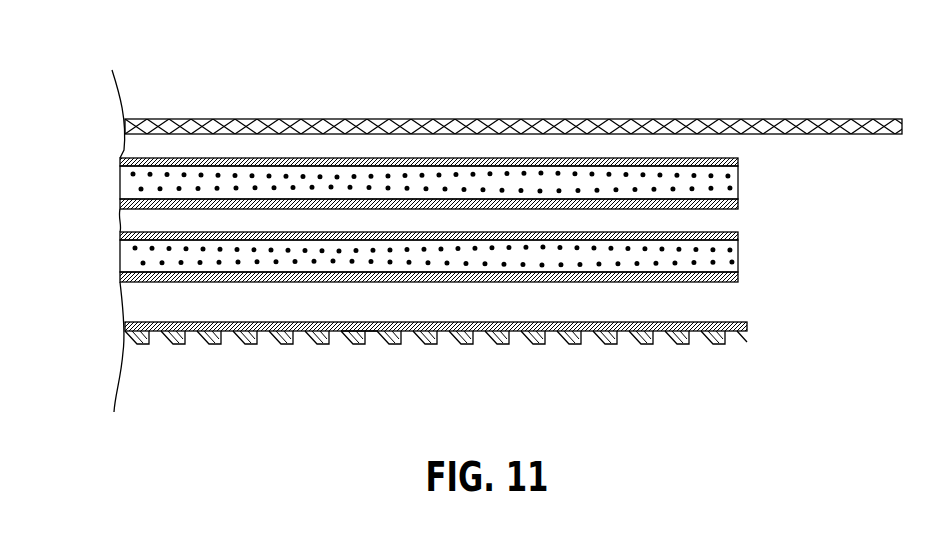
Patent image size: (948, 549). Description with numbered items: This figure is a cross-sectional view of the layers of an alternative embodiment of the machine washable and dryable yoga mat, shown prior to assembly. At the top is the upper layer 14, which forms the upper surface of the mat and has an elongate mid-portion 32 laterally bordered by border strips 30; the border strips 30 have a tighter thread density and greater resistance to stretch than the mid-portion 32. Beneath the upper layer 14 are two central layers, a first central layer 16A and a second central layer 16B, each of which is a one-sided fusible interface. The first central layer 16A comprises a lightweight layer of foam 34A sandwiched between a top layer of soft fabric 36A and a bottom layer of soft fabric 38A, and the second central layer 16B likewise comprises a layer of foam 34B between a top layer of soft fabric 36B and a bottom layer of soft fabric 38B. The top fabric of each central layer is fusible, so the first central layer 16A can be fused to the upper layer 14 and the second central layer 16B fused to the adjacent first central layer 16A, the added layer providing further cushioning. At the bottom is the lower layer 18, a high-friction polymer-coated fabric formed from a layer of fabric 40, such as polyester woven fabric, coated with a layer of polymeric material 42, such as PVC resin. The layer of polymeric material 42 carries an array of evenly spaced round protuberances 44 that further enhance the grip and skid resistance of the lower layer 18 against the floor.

The upper layer 14 is at (306, 115).
The border strips 30 is at (513, 90).
The mid-portion 32 is at (530, 121).
The first central layer 16A is at (469, 181).
The top layer of soft fabric 36A is at (740, 158).
The layer of foam 34A is at (740, 182).
The bottom layer of soft fabric 38A is at (740, 207).
The second central layer 16B is at (479, 273).
The top layer of soft fabric 36B is at (740, 233).
The layer of foam 34B is at (740, 267).
The bottom layer of soft fabric 38B is at (740, 280).
The lower layer 18 is at (435, 370).
The layer of fabric 40 is at (748, 325).
The layer of polymeric material 42 is at (710, 345).
The protuberances 44 is at (371, 347).